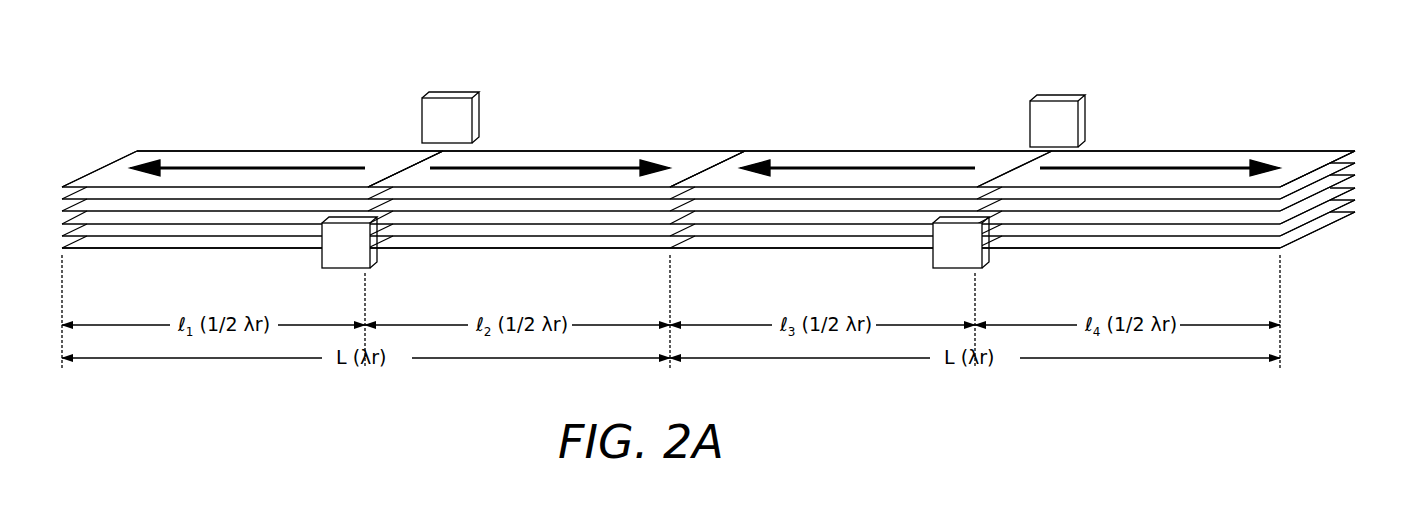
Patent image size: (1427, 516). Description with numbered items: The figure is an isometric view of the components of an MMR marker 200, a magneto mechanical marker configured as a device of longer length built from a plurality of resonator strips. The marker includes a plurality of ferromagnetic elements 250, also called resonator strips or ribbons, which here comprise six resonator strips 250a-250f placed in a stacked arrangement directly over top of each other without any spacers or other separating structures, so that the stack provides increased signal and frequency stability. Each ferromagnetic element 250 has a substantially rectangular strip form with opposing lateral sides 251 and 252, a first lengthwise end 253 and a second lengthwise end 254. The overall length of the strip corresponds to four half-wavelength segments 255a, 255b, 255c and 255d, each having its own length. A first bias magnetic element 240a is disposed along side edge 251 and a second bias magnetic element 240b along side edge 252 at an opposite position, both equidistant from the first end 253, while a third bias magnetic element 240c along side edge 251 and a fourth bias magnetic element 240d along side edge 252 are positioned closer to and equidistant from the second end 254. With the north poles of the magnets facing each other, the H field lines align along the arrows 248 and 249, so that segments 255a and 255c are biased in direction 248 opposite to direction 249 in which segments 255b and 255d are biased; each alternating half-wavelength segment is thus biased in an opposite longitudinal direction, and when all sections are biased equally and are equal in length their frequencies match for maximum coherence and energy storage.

The MMR marker 200 is at (1262, 36).
The first bias magnetic element 240a is at (452, 92).
The second bias magnetic element 240b is at (378, 258).
The third bias magnetic element 240c is at (1058, 95).
The fourth bias magnetic element 240d is at (990, 258).
The bias direction arrow 248 is at (269, 165).
The bias direction arrow 249 is at (537, 166).
The ferromagnetic element 250 is at (695, 148).
The resonator strips 250a-250f is at (1360, 150).
The lateral side 251 is at (343, 146).
The lateral side 252 is at (184, 256).
The first lengthwise end 253 is at (65, 178).
The second lengthwise end 254 is at (1356, 145).
The half-wavelength segment 255a is at (200, 150).
The half-wavelength segment 255b is at (603, 150).
The half-wavelength segment 255c is at (826, 150).
The half-wavelength segment 255d is at (1215, 150).